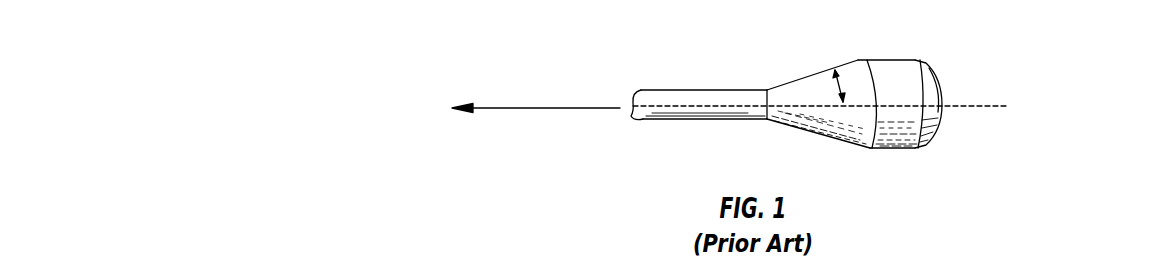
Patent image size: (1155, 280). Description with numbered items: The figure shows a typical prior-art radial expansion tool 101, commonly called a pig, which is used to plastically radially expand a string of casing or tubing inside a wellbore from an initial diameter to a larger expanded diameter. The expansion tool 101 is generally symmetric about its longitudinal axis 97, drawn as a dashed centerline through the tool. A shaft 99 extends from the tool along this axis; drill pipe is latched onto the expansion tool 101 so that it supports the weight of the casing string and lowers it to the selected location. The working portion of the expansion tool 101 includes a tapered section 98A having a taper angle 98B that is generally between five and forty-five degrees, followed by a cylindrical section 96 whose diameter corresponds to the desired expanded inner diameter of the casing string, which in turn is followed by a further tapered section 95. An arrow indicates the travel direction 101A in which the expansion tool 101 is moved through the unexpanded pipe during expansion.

The tapered section 95 is at (922, 63).
The cylindrical section 96 is at (888, 61).
The longitudinal axis 97 is at (980, 103).
The tapered section 98A is at (818, 134).
The taper angle 98B is at (838, 88).
The shaft / mandrel 99 is at (697, 90).
The expansion tool 101 is at (885, 152).
The direction 101A is at (518, 106).